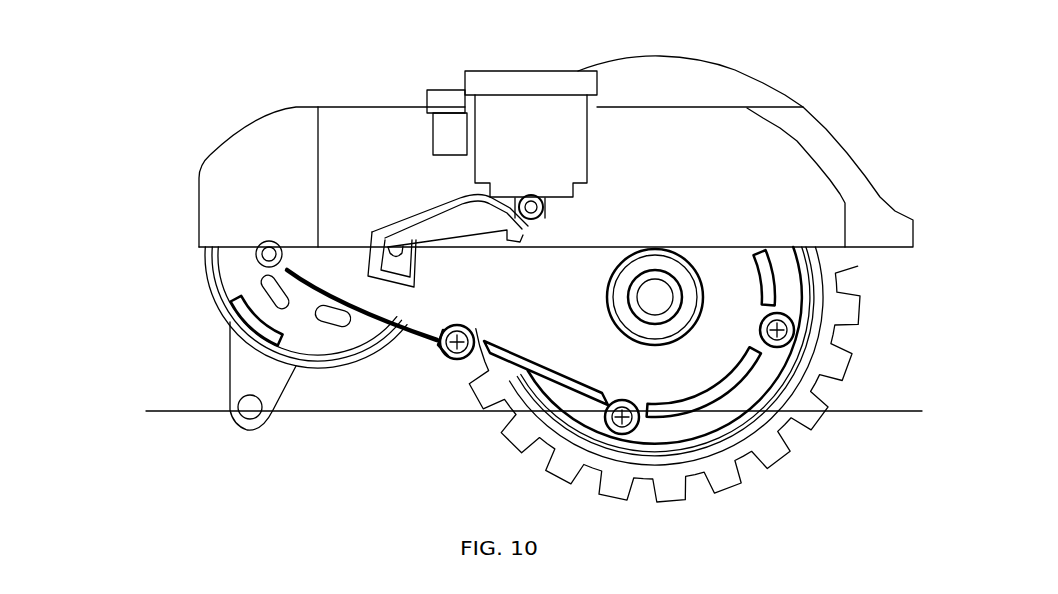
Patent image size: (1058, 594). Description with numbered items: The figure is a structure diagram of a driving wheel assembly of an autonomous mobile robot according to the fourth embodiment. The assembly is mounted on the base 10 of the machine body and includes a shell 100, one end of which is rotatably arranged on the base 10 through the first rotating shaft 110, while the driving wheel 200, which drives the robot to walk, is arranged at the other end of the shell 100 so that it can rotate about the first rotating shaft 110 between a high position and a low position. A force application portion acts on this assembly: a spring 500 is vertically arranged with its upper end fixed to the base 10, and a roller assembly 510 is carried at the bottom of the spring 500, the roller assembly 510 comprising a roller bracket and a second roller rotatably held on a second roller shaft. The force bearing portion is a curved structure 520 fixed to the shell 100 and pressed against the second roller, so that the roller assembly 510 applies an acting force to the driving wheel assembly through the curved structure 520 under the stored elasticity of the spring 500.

The base 10 is at (534, 253).
The shell 100 is at (735, 333).
The first rotating shaft 110 is at (240, 402).
The driving wheel 200 is at (803, 435).
The spring 500 is at (545, 197).
The roller assembly 510 is at (533, 217).
The curved structure 520 is at (430, 237).